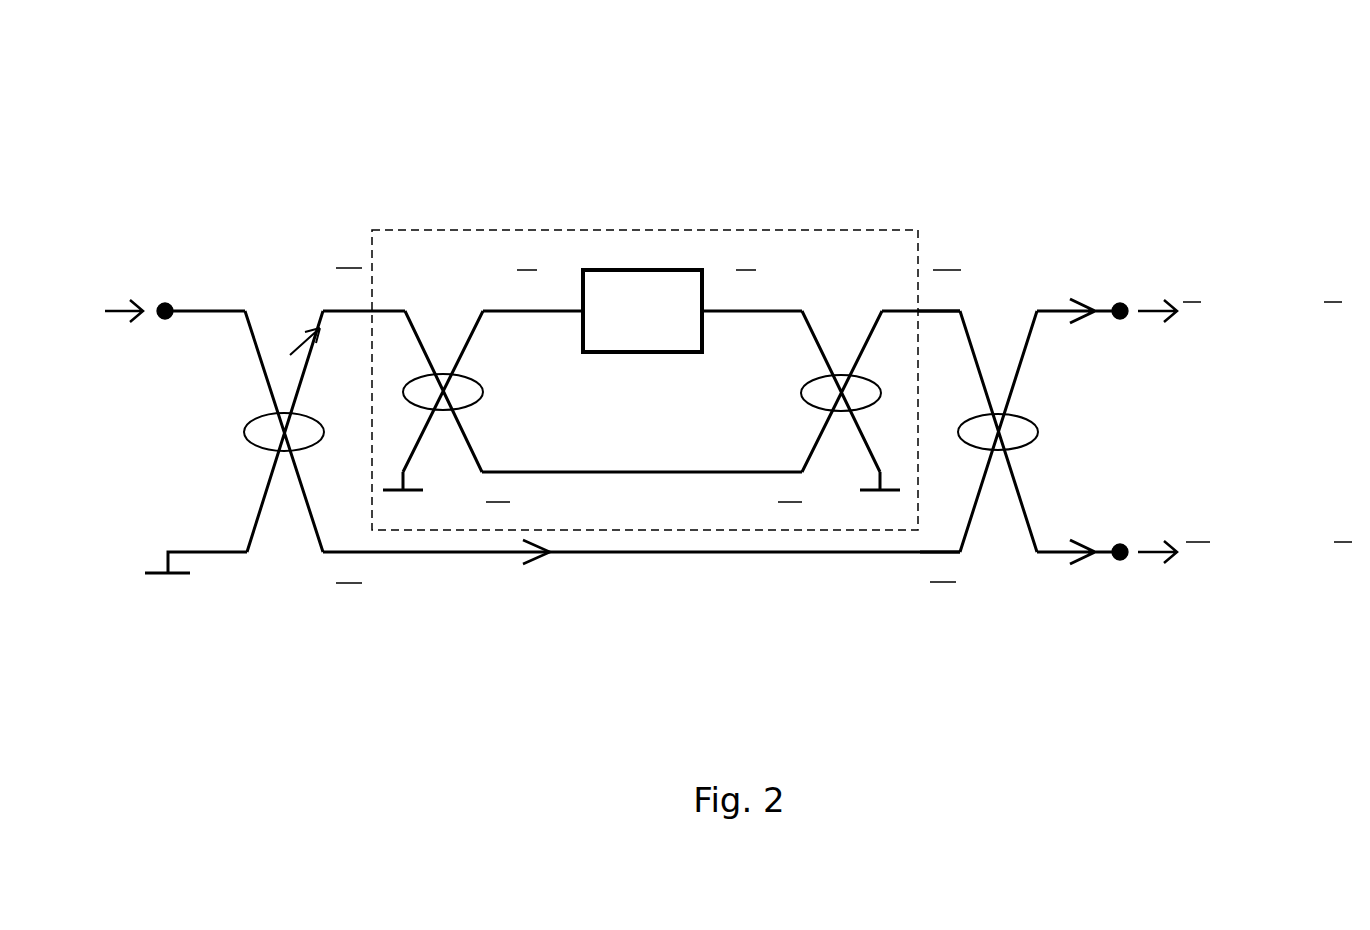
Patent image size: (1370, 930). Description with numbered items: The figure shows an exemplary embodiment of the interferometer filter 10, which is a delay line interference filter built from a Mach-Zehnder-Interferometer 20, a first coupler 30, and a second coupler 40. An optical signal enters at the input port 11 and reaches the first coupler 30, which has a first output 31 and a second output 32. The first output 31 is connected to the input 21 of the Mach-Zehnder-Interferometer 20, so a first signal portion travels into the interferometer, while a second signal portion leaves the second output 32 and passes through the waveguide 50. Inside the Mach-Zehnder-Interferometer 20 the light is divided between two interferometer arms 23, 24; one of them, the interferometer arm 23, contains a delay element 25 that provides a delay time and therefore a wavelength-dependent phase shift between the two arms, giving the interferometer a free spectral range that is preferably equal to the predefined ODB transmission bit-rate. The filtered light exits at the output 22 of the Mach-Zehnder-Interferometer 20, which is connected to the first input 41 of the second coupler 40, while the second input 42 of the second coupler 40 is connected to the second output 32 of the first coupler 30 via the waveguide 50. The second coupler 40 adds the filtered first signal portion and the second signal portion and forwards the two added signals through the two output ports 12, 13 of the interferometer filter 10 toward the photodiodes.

The interferometer filter 10 is at (602, 617).
The input port 11 is at (170, 305).
The output port 12 is at (1123, 322).
The output port 13 is at (1125, 557).
The Mach-Zehnder-Interferometer 20 is at (663, 230).
The input 21 is at (375, 311).
The output 22 is at (917, 310).
The interferometer arm 23 is at (768, 313).
The interferometer arm 24 is at (720, 470).
The delay element 25 is at (617, 327).
The first coupler 30 is at (258, 415).
The first output 31 is at (332, 308).
The second output 32 is at (320, 550).
The second coupler 40 is at (1023, 428).
The first input 41 is at (960, 315).
The second input 42 is at (963, 552).
The waveguide 50 is at (713, 552).